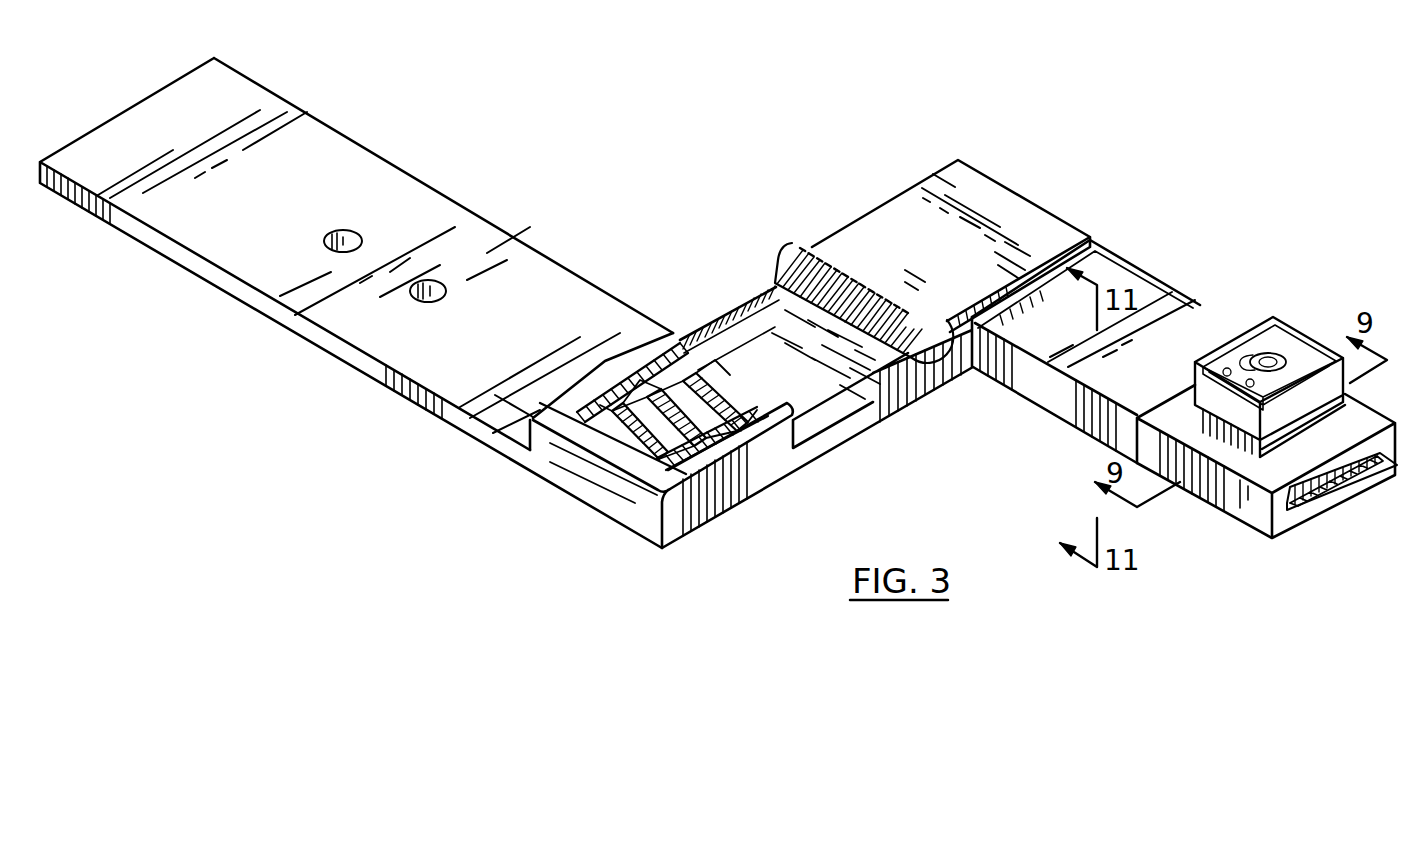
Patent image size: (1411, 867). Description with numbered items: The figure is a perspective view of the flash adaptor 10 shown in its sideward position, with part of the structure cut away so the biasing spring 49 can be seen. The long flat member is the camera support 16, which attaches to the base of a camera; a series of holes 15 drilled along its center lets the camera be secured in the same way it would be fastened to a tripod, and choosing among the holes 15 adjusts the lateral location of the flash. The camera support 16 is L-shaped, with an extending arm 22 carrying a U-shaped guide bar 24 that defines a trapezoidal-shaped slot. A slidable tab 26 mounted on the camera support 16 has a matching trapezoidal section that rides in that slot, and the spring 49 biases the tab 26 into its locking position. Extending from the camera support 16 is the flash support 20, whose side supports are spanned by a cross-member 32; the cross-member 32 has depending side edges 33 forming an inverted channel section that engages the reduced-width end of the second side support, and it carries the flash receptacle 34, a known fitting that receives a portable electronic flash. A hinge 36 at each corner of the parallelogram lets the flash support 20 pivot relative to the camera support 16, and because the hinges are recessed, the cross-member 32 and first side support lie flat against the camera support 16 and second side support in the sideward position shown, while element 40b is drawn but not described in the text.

The flash adaptor 10 is at (380, 467).
The holes 15 is at (407, 220).
The camera support 16 is at (333, 125).
The flash support 20 is at (1155, 275).
The extending arm 22 is at (887, 420).
The U-shaped guide bar 24 is at (757, 300).
The slidable tab 26 is at (873, 208).
The cross-member 32 is at (1213, 507).
The depending side edges 33 is at (1280, 528).
The flash receptacle 34 is at (1255, 318).
The hinge 36 is at (1358, 465).
The contact plate 40b is at (1047, 272).
The spring 49 is at (708, 385).